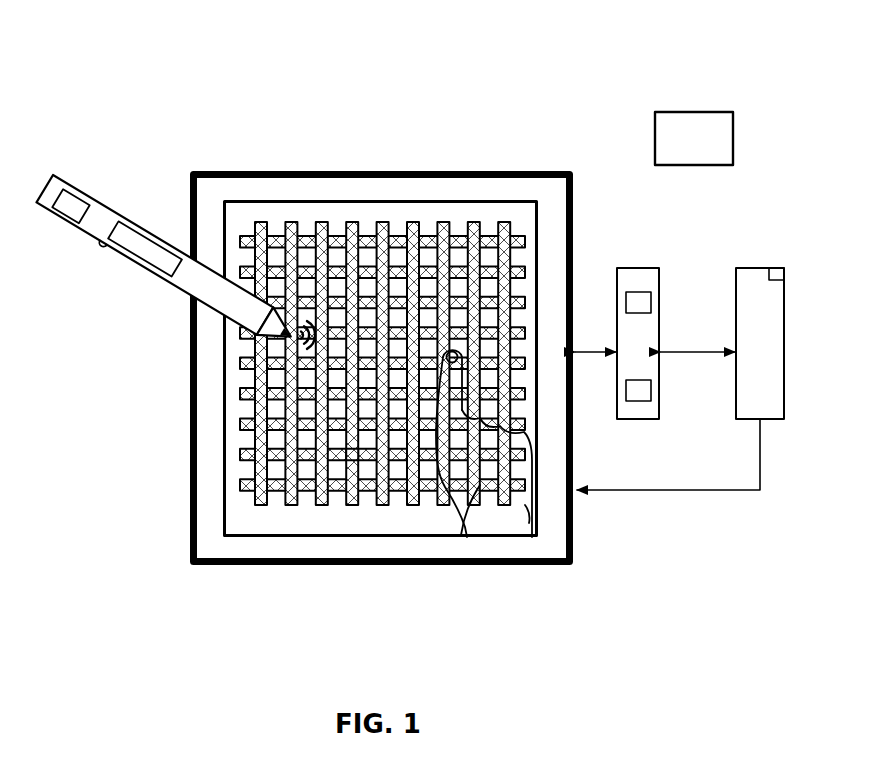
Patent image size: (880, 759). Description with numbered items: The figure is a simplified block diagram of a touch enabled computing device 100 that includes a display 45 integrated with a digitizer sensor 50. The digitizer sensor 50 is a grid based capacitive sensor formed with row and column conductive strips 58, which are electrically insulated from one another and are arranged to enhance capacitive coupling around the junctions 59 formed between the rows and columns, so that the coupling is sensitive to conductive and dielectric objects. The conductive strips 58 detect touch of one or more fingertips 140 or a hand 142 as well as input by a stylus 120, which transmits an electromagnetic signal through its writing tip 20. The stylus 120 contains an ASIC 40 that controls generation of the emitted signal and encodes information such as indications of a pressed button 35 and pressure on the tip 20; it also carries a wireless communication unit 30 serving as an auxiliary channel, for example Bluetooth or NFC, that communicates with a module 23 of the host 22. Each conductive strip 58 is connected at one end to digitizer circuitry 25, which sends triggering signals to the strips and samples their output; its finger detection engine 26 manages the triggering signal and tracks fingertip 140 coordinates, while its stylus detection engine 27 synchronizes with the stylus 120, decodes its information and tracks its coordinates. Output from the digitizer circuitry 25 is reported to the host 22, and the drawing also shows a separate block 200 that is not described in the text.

The computing device 100 is at (382, 93).
The display 45 is at (498, 173).
The digitizer sensor 50 is at (538, 247).
The conductive strips 58 is at (435, 222).
The junctions 59 is at (350, 450).
The stylus 120 is at (163, 232).
The wireless communication unit 30 is at (73, 208).
The button 35 is at (98, 250).
The ASIC 40 is at (132, 260).
The writing tip 20 is at (272, 340).
The fingertip 140 is at (445, 362).
The hand 142 is at (461, 535).
The digitizer circuitry 25 is at (634, 268).
The finger detection engine 26 is at (651, 301).
The stylus detection engine 27 is at (651, 391).
The host 22 is at (762, 268).
The module 23 is at (782, 279).
The remote device 200 is at (733, 125).